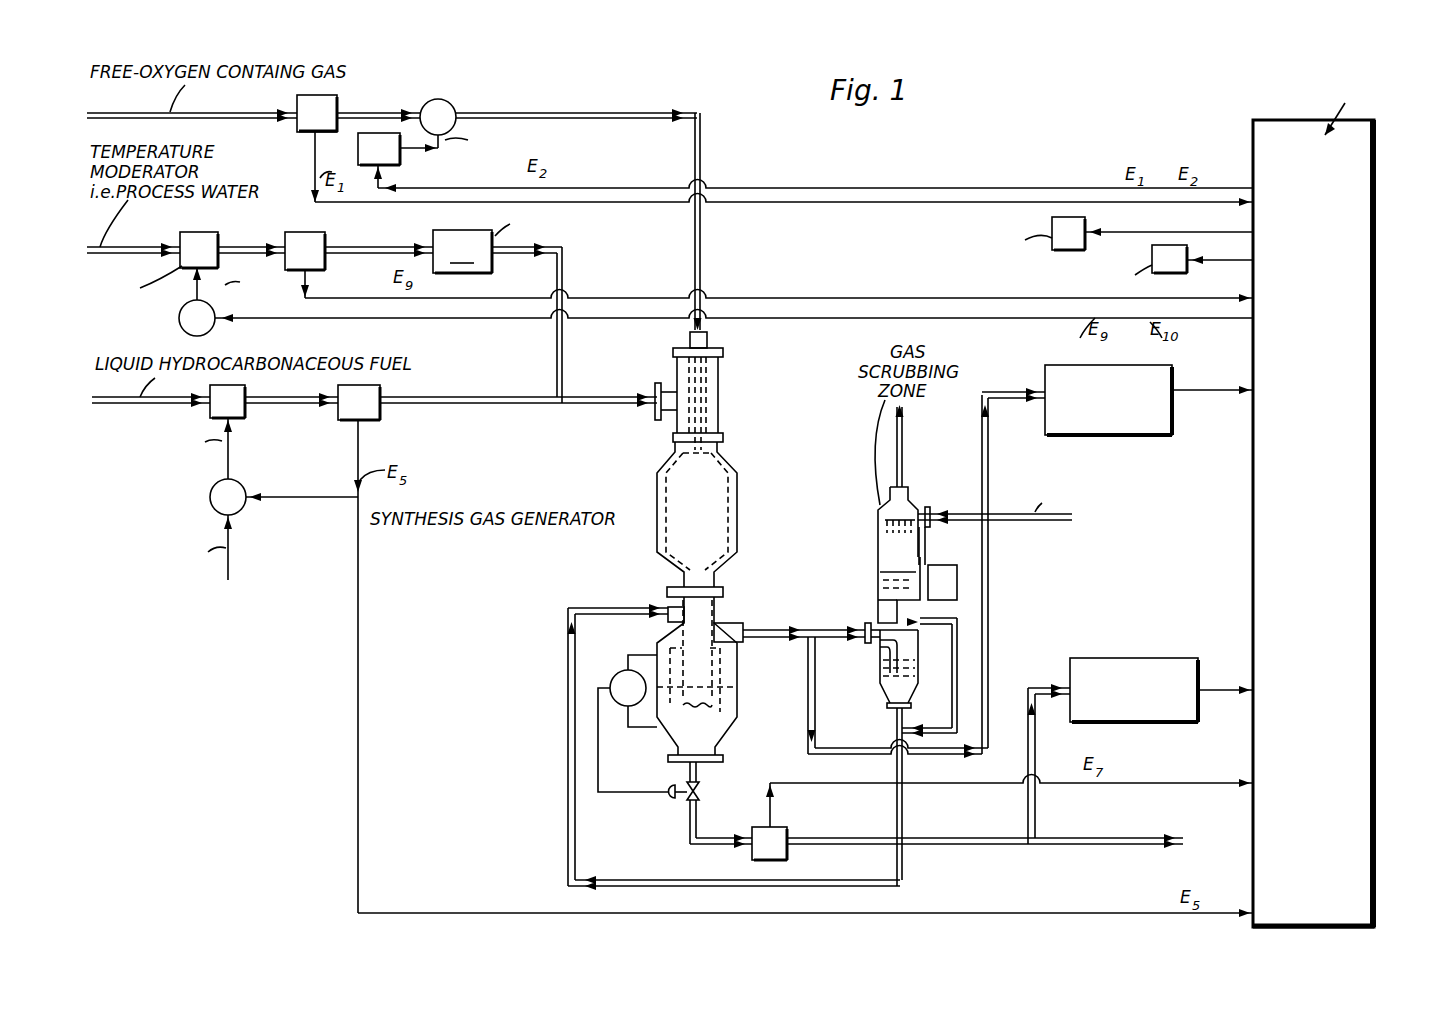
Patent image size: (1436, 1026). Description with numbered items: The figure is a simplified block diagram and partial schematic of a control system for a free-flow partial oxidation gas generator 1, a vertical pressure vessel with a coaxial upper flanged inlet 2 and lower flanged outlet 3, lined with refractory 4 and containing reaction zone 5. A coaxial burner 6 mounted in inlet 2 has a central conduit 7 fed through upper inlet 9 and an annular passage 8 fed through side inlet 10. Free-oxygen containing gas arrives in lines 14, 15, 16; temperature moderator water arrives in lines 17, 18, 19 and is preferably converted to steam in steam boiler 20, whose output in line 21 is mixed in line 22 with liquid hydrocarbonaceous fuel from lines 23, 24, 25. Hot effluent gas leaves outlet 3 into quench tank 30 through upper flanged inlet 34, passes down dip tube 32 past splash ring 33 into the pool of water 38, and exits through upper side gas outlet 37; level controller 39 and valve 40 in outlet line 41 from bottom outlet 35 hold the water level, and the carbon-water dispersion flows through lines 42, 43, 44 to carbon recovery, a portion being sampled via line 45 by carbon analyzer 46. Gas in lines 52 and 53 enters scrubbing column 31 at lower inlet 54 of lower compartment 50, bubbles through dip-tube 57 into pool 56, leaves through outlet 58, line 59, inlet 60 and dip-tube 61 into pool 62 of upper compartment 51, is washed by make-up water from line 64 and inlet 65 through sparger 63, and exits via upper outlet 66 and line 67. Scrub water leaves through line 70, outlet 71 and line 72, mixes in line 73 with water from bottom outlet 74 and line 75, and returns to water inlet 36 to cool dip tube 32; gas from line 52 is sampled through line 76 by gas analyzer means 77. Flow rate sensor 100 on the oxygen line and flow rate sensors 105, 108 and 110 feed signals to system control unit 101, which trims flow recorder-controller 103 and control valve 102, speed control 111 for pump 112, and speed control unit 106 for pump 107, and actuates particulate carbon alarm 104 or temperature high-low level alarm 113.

The gas generator 1 is at (738, 505).
The upper flanged inlet 2 is at (728, 456).
The lower flanged outlet 3 is at (716, 578).
The refractory 4 is at (730, 527).
The reaction zone 5 is at (680, 483).
The burner 6 is at (720, 372).
The central conduit 7 is at (712, 430).
The annular passage 8 is at (688, 372).
The upper inlet 9 is at (708, 340).
The side inlet 10 is at (657, 392).
The free-oxygen containing gas line 14 is at (240, 113).
The free-oxygen containing gas line 15 is at (388, 112).
The free-oxygen containing gas line 16 is at (582, 112).
The water line 17 is at (135, 247).
The temperature moderator line 18 is at (242, 246).
The temperature moderator line 19 is at (390, 246).
The steam boiler 20 is at (532, 239).
The steam line 21 is at (565, 252).
The mixed feed line 22 is at (583, 405).
The liquid hydrocarbonaceous fuel line 23 is at (132, 405).
The liquid hydrocarbonaceous fuel line 24 is at (275, 406).
The liquid hydrocarbonaceous fuel line 25 is at (510, 397).
The quench tank 30 is at (740, 693).
The scrubbing column 31 is at (878, 548).
The dip tube 32 is at (680, 612).
The splash ring 33 is at (740, 708).
The upper flanged inlet 34 is at (724, 604).
The bottom central carbon-water dispersion outlet 35 is at (670, 758).
The upper side water inlet 36 is at (667, 592).
The upper side gas outlet 37 is at (741, 628).
The pool of water 38 is at (705, 718).
The level controller 39 is at (615, 677).
The valve 40 is at (686, 797).
The carbon-water dispersion outlet line 41 is at (688, 770).
The carbon-water dispersion line 42 is at (700, 845).
The carbon-water dispersion line 43 is at (950, 837).
The carbon-water dispersion line 44 is at (1090, 837).
The sample line 45 is at (1036, 760).
The carbon analyzer 46 is at (1118, 658).
The lower compartment 50 is at (850, 628).
The upper compartment 51 is at (878, 528).
The gas line 52 is at (772, 639).
The gas line 53 is at (825, 640).
The lower inlet 54 is at (876, 642).
The pool of water 56 is at (882, 685).
The dip-tube 57 is at (916, 690).
The outlet 58 is at (942, 582).
The line 59 is at (960, 570).
The inlet 60 is at (936, 546).
The dip-tube 61 is at (897, 540).
The pool of water 62 is at (880, 576).
The sparger 63 is at (900, 492).
The make-up water line 64 is at (1052, 524).
The inlet 65 is at (925, 512).
The upper outlet 66 is at (878, 500).
The line 67 is at (903, 447).
The line 70 is at (896, 606).
The outlet 71 is at (939, 655).
The line 72 is at (958, 636).
The line 73 is at (896, 838).
The bottom outlet 74 is at (908, 708).
The line 75 is at (897, 735).
The sample line 76 is at (815, 720).
The gas analyzer means 77 is at (1123, 437).
The flow rate sensor 100 is at (330, 96).
The system control unit 101 is at (1330, 276).
The control valve 102 is at (455, 104).
The flow recorder-controller 103 is at (402, 163).
The alarm 104 is at (1062, 217).
The flow rate sensor 105 is at (382, 418).
The speed control unit 106 is at (210, 497).
The pump 107 is at (250, 388).
The flow rate sensor 108 is at (758, 828).
The flow rate sensor 110 is at (322, 232).
The speed control 111 is at (179, 318).
The pump 112 is at (200, 232).
The high-low level alarm 113 is at (1152, 252).